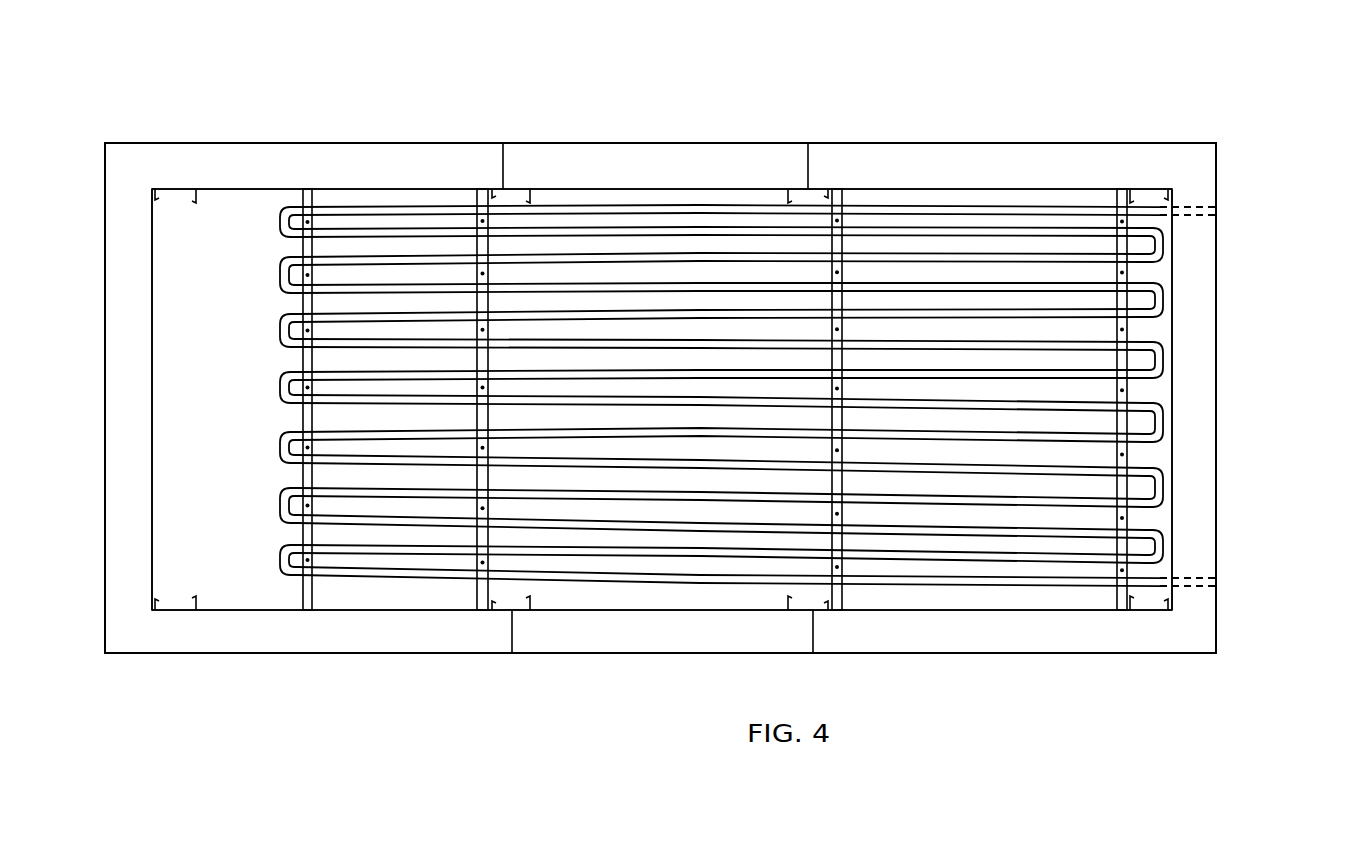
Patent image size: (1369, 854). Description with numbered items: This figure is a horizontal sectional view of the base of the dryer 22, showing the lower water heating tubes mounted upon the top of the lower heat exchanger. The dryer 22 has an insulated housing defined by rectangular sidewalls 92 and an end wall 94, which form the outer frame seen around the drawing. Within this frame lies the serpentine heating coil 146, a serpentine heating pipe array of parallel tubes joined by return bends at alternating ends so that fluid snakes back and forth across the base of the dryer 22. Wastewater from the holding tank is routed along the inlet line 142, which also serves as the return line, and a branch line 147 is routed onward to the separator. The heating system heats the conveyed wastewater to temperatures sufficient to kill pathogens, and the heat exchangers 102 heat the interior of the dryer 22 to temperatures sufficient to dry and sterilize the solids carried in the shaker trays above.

The dryer 22 is at (175, 138).
The sidewalls 92 is at (378, 155).
The end wall 94 is at (127, 480).
The heat exchangers 102 is at (285, 357).
The serpentine heating coil 146 is at (283, 446).
The branch line 147 is at (1232, 210).
The inlet line 142 is at (1248, 584).